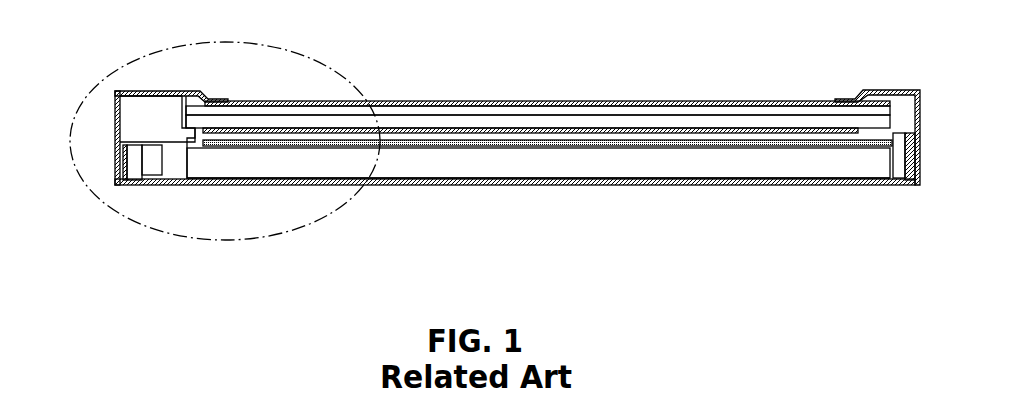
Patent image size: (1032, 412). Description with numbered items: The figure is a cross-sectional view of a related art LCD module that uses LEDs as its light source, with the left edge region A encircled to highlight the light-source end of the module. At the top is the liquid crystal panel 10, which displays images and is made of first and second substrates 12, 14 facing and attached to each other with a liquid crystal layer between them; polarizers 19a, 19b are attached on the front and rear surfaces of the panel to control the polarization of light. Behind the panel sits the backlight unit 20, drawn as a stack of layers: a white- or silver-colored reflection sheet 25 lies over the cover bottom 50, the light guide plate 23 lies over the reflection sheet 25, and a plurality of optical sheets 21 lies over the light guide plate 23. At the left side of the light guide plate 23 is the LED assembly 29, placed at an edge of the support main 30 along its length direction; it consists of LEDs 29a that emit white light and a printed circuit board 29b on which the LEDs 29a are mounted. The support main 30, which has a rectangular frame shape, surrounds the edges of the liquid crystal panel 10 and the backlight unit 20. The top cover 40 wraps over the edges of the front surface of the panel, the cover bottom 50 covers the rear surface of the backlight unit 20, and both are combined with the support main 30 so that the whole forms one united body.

The liquid crystal panel 10 is at (538, 73).
The first substrate 12 is at (493, 123).
The second substrate 14 is at (452, 110).
The polarizer 19a is at (650, 130).
The polarizer 19b is at (600, 100).
The backlight unit 20 is at (507, 228).
The optical sheets 21 is at (325, 140).
The light guide plate 23 is at (280, 180).
The reflection sheet 25 is at (238, 180).
The LED assembly 29 is at (155, 218).
The LEDs 29a is at (152, 168).
The printed circuit board 29b is at (130, 178).
The support main 30 is at (143, 118).
The top cover 40 is at (172, 91).
The cover bottom 50 is at (525, 185).
The edge region A is at (90, 193).